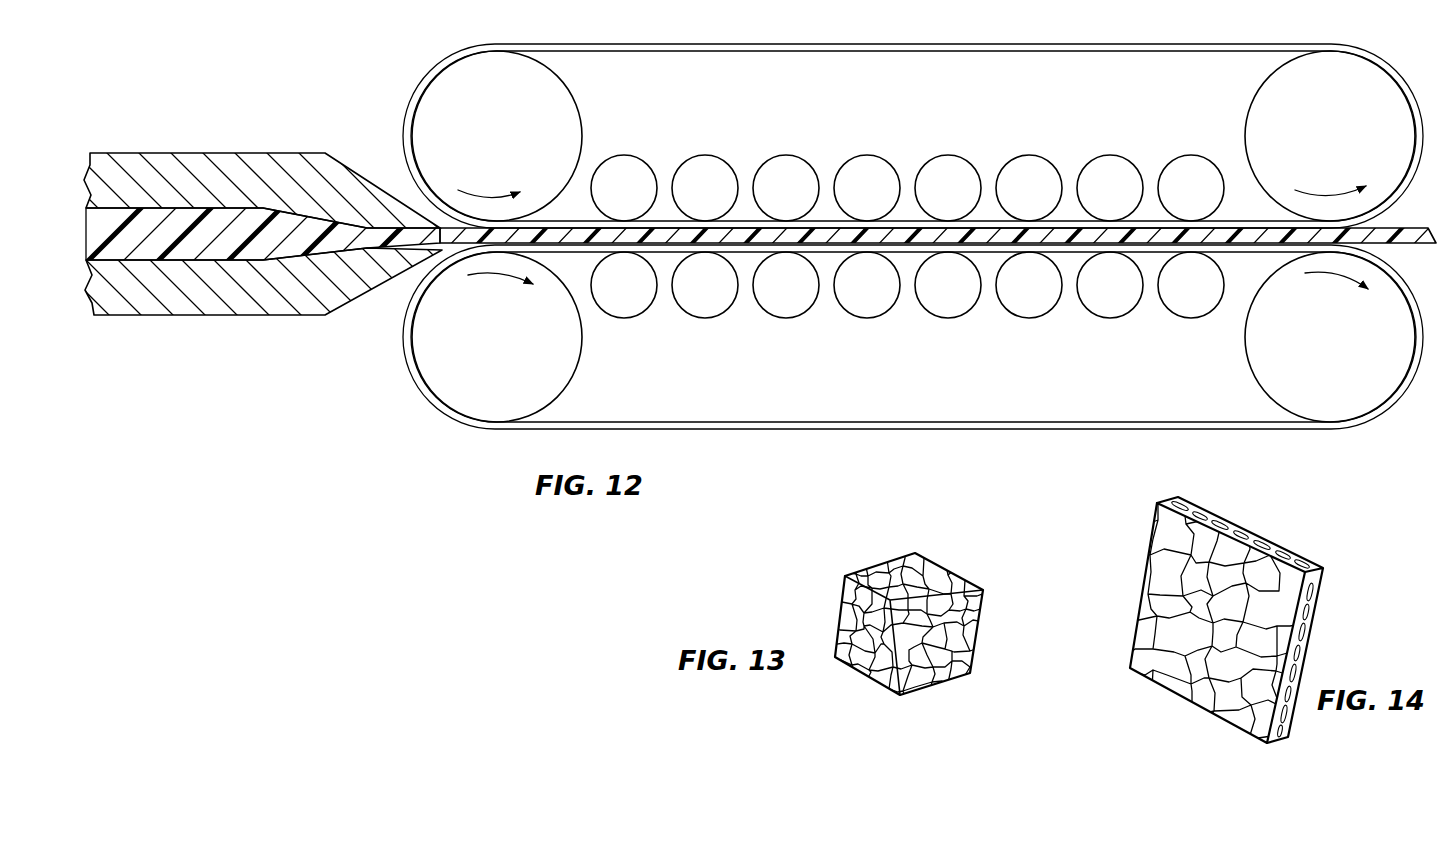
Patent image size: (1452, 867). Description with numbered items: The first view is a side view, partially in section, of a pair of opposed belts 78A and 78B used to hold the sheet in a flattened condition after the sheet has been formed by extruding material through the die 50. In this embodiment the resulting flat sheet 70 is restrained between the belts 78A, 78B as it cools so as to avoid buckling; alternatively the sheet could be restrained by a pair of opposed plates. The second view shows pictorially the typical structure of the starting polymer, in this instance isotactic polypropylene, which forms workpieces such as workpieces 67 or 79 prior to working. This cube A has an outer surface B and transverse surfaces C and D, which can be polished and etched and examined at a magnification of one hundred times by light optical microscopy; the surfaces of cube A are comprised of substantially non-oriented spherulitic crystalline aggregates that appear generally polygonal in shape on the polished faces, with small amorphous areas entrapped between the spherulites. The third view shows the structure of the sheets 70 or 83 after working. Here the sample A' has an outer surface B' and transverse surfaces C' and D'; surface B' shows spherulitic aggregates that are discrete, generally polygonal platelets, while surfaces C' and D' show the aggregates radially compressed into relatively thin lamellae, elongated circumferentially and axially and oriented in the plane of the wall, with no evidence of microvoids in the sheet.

In FIG. 12, the extrusion die 50 is at (275, 150).
In FIG. 12, the workpiece 67 is at (342, 218).
In FIG. 13, the workpiece 67 is at (916, 612).
In FIG. 12, the workpiece 79 is at (158, 237).
In FIG. 13, the workpiece 79 is at (865, 561).
In FIG. 12, the belt 78A is at (738, 220).
In FIG. 12, the belt 78B is at (746, 252).
In FIG. 12, the sheet 83 is at (937, 194).
In FIG. 14, the sheet 83 is at (1239, 632).
In FIG. 12, the flat sheet 70 is at (1250, 238).
In FIG. 14, the flat sheet 70 is at (1286, 548).
In FIG. 13, the cube A is at (810, 608).
In FIG. 13, the outer surface B is at (826, 677).
In FIG. 13, the transverse surface C is at (989, 637).
In FIG. 13, the transverse surface D is at (948, 553).
In FIG. 14, the sample A' is at (1110, 566).
In FIG. 14, the outer surface B' is at (1132, 630).
In FIG. 14, the transverse surface C' is at (1329, 622).
In FIG. 14, the transverse surface D' is at (1217, 505).